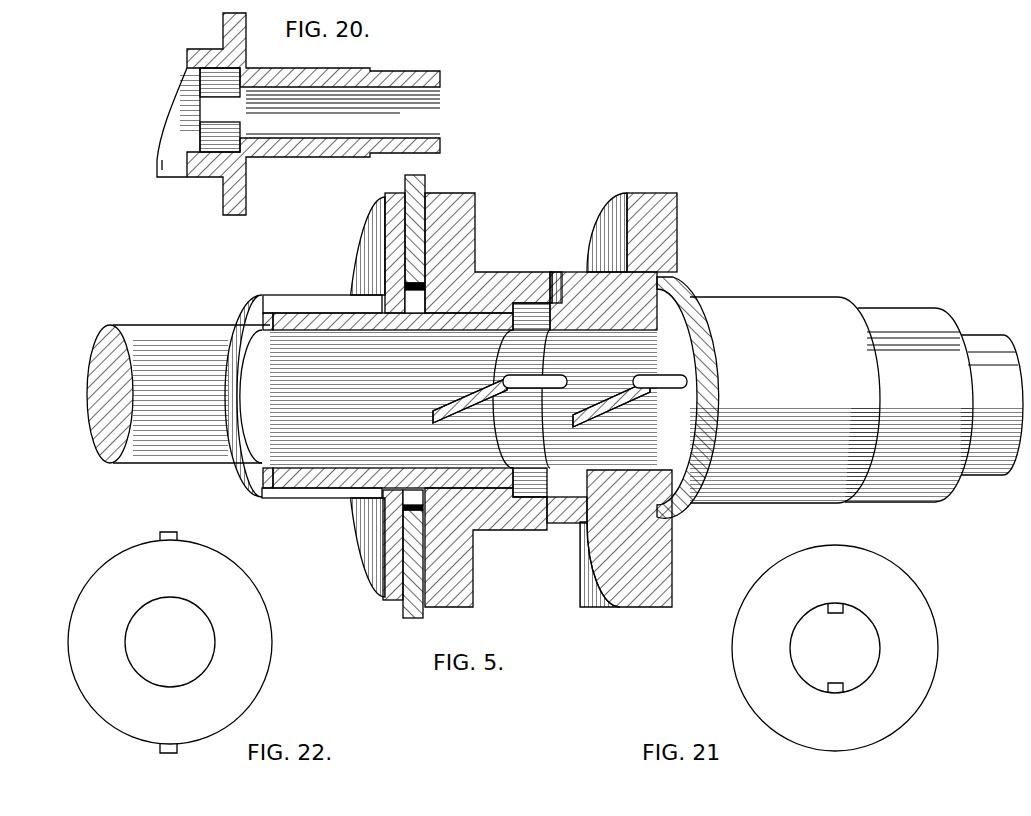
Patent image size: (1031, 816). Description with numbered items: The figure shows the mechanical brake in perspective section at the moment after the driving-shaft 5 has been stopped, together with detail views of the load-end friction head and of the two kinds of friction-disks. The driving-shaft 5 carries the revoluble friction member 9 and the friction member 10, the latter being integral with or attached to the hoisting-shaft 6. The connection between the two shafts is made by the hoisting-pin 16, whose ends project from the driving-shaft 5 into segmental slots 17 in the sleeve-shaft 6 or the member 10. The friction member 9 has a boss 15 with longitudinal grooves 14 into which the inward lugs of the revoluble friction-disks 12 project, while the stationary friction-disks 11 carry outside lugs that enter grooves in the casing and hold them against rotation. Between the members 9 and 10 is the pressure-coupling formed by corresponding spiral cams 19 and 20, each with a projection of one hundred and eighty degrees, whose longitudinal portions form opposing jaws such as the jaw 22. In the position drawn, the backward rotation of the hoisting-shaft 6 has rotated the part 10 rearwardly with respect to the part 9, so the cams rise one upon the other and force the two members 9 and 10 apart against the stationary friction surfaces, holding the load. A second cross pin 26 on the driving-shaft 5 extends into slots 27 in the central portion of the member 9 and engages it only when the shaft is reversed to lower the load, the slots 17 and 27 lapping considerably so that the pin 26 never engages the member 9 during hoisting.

In FIG. 5, the driving-shaft 5 is at (147, 335).
In FIG. 5, the hoisting-shaft 6 is at (770, 306).
In FIG. 5, the friction member 9 is at (452, 195).
In FIG. 5, the friction member 10 is at (678, 205).
In FIG. 5, the stationary friction-disks 11 is at (415, 211).
In FIG. 22, the stationary friction-disks 11 is at (90, 597).
In FIG. 5, the revoluble friction-disks 12 is at (373, 227).
In FIG. 21, the revoluble friction-disks 12 is at (913, 598).
In FIG. 5, the longitudinal grooves 14 is at (279, 303).
In FIG. 5, the boss 15 is at (247, 480).
In FIG. 5, the hoisting-pin 16 is at (700, 381).
In FIG. 20, the segmental slots 17 is at (207, 83).
In FIG. 5, the segmental slots 17 is at (595, 385).
In FIG. 5, the spiral cam 19 is at (527, 303).
In FIG. 20, the spiral cam 20 is at (172, 125).
In FIG. 5, the spiral cam 20 is at (555, 273).
In FIG. 20, the jaw 22 is at (162, 170).
In FIG. 5, the cross pin 26 is at (432, 384).
In FIG. 5, the slots 27 is at (433, 432).